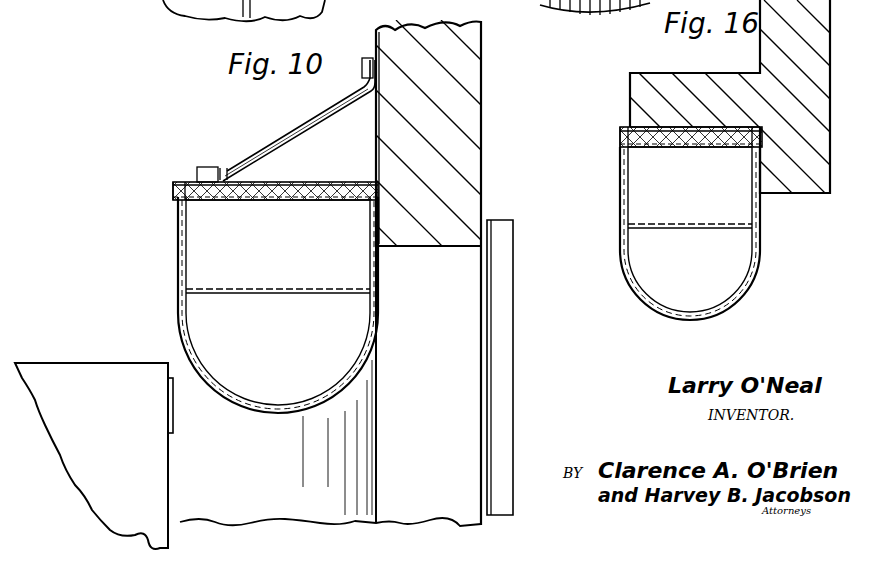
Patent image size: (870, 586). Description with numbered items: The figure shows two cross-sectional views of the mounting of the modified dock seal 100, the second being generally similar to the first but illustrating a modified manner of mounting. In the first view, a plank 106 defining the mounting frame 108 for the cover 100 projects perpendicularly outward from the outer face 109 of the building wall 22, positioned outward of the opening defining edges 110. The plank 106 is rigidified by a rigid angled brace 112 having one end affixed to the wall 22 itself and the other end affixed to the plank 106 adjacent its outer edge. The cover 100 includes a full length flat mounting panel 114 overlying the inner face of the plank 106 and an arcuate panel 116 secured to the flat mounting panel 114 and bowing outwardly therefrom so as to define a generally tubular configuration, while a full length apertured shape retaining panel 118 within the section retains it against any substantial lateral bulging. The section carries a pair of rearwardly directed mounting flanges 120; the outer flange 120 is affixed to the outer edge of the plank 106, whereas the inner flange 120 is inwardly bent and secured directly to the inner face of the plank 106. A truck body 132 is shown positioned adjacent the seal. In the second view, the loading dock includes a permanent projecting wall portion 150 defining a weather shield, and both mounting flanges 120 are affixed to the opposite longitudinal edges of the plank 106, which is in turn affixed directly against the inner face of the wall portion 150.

In FIG. 10, the building wall 22 is at (470, 165).
In FIG. 16, the dock seal 100 is at (618, 200).
In FIG. 10, the plank 106 is at (302, 185).
In FIG. 16, the plank 106 is at (697, 130).
In FIG. 16, the mounting frame 108 is at (650, 120).
In FIG. 10, the outer face 109 is at (376, 146).
In FIG. 10, the opening defining edges 110 is at (446, 247).
In FIG. 10, the rigid angled brace 112 is at (297, 128).
In FIG. 10, the flat mounting panel 114 is at (243, 203).
In FIG. 16, the flat mounting panel 114 is at (683, 150).
In FIG. 10, the arcuate panel 116 is at (270, 418).
In FIG. 16, the arcuate panel 116 is at (658, 312).
In FIG. 10, the shape retaining panel 118 is at (198, 294).
In FIG. 16, the shape retaining panel 118 is at (672, 214).
In FIG. 10, the mounting flange 120 is at (176, 186).
In FIG. 16, the mounting flange 120 is at (762, 136).
In FIG. 10, the truck body 132 is at (108, 375).
In FIG. 16, the projecting wall portion 150 is at (673, 86).